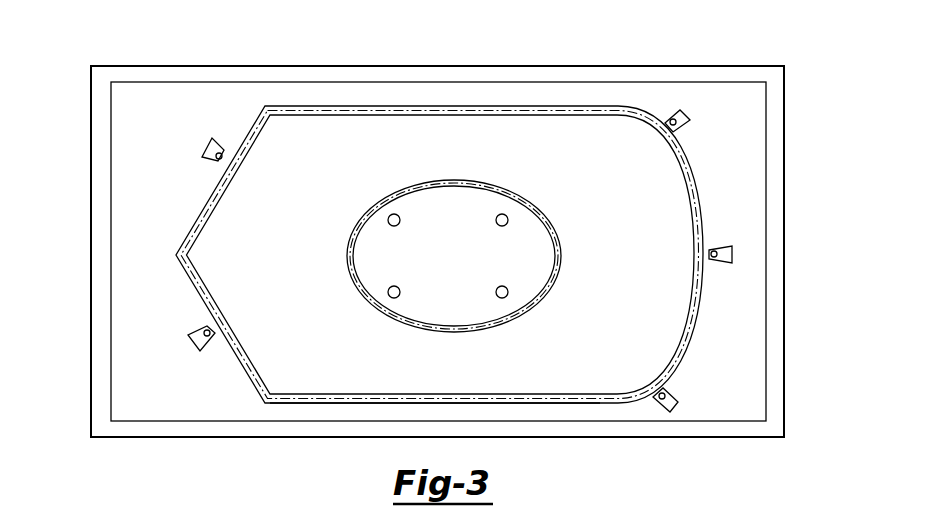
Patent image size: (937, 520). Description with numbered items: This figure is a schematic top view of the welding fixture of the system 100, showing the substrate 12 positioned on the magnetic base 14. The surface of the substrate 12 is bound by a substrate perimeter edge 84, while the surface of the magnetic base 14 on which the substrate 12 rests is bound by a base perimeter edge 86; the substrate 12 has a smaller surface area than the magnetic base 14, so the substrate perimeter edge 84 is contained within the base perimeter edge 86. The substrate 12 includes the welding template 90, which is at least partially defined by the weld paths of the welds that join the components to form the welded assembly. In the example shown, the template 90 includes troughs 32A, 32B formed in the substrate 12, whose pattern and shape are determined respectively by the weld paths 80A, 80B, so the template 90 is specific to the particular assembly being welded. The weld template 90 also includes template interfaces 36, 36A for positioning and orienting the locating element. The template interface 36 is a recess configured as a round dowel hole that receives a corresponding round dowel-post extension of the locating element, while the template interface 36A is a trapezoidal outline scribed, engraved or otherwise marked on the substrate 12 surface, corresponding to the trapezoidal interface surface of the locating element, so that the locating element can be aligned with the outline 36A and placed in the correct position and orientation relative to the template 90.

The substrate 12 is at (641, 66).
The magnetic base 14 is at (784, 129).
The substrate perimeter edge 84 is at (766, 267).
The base perimeter edge 86 is at (784, 362).
The system 100 is at (826, 211).
The welding template 90 is at (178, 98).
The trough 32A is at (688, 332).
The trough 32B is at (508, 318).
The weld path 80A is at (320, 402).
The weld path 80B is at (520, 198).
The template interface 36 is at (400, 222).
The template interface 36A is at (206, 147).